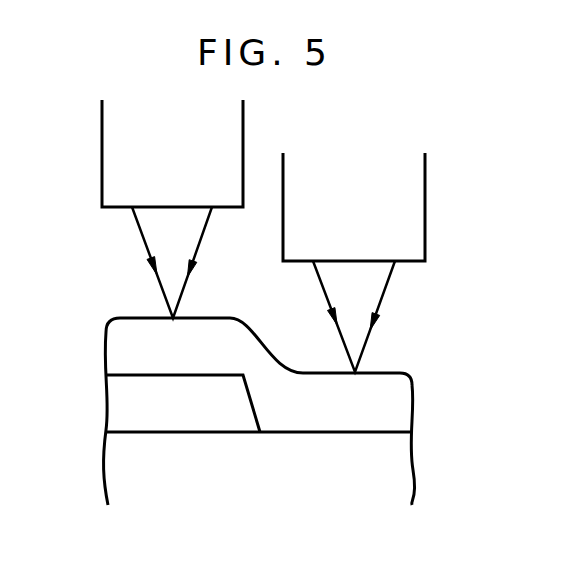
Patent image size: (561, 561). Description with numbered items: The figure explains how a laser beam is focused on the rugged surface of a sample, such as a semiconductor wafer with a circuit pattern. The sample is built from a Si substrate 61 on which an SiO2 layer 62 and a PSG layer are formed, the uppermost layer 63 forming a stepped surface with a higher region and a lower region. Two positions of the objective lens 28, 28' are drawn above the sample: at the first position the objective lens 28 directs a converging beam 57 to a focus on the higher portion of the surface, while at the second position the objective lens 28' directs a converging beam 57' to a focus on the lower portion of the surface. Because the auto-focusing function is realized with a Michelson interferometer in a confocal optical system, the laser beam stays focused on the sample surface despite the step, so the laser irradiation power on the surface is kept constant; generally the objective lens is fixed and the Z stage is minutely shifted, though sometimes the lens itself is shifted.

The objective lens 28 is at (139, 153).
The objective lens 28' is at (391, 207).
The light beam 57 is at (137, 262).
The light beam 57' is at (385, 316).
The top layer 63 is at (106, 350).
The SiO2 layer 62 is at (106, 406).
The Si substrate 61 is at (106, 471).